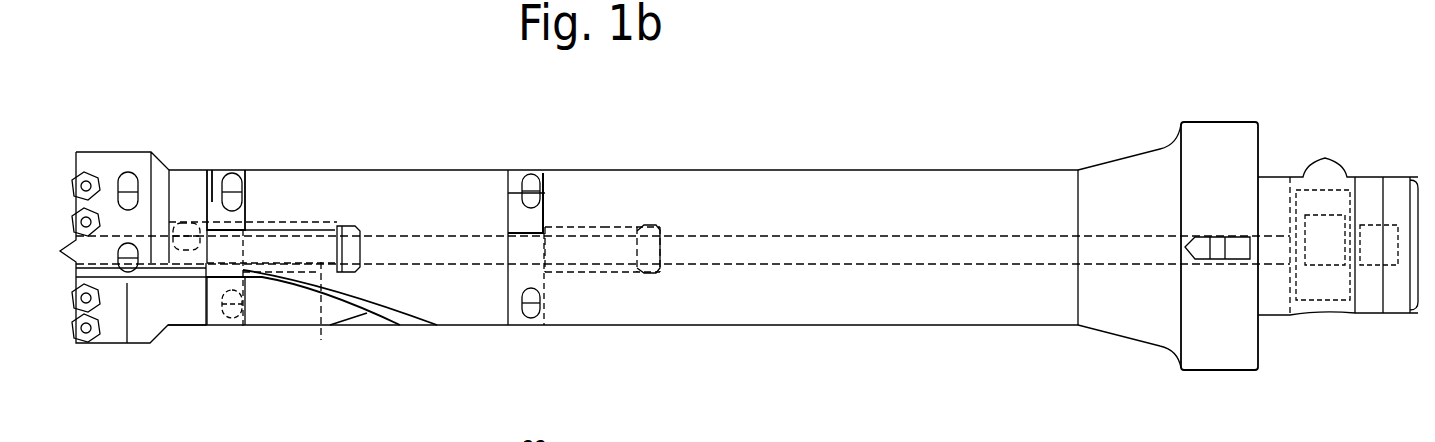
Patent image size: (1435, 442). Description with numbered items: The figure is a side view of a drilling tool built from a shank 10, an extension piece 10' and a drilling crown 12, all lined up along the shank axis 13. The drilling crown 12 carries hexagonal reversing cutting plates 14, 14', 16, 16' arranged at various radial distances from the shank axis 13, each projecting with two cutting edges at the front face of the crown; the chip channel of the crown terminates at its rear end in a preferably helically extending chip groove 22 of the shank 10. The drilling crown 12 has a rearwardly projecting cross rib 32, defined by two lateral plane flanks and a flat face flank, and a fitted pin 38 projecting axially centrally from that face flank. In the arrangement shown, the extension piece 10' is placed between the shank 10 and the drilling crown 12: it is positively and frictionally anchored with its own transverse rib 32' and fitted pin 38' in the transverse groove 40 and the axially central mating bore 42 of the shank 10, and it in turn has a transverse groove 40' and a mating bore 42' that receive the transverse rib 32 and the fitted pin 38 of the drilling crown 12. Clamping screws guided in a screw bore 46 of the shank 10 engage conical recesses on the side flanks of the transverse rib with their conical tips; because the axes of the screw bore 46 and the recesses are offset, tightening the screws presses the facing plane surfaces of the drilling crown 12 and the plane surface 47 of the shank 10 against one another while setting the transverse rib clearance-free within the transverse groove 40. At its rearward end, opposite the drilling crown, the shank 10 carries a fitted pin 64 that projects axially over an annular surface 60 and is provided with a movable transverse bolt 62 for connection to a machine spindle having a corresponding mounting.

The shank 10 is at (844, 226).
The extension piece 10' is at (338, 205).
The drilling crown 12 is at (152, 320).
The shank axis 13 is at (915, 240).
The reversing cutting plate 14 is at (96, 378).
The reversing cutting plate 14' is at (79, 363).
The reversing cutting plate 16 is at (81, 127).
The reversing cutting plate 16' is at (102, 156).
The chip groove 22 is at (342, 312).
The cross rib 32 is at (232, 160).
The transverse rib 32' is at (534, 201).
The fitted pin 38 is at (303, 326).
The fitted pin 38' is at (592, 159).
The transverse groove 40 is at (554, 184).
The transverse groove 40' is at (277, 144).
The mating bore 42 is at (615, 185).
The mating bore 42' is at (284, 175).
The screw bore 46 is at (540, 168).
The plane surface 47 is at (507, 300).
The annular surface 60 is at (1260, 345).
The transverse bolt 62 is at (1325, 170).
The fitted pin 64 is at (1393, 298).